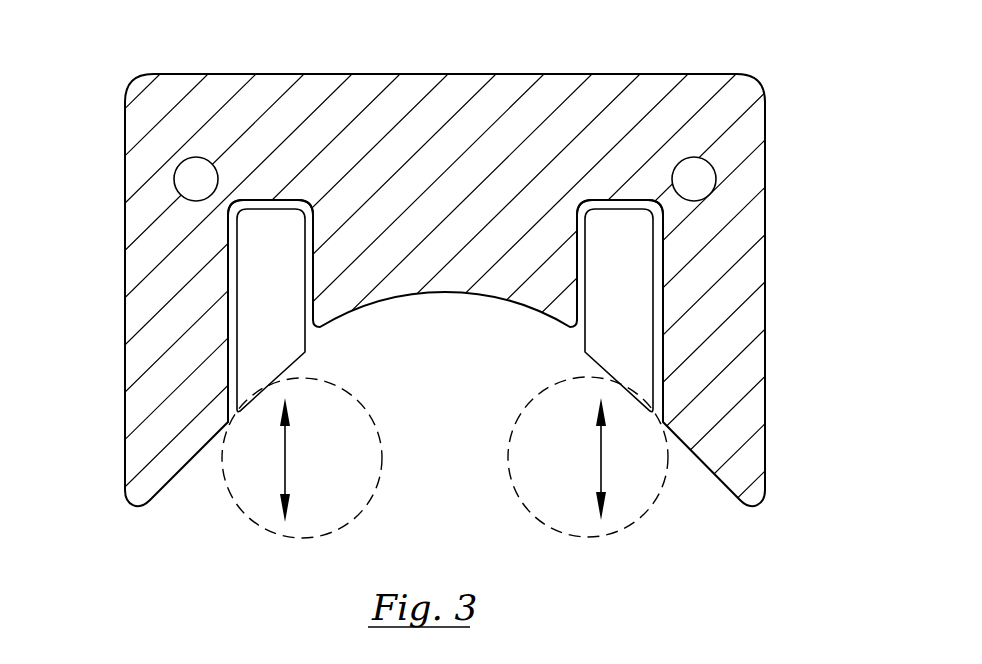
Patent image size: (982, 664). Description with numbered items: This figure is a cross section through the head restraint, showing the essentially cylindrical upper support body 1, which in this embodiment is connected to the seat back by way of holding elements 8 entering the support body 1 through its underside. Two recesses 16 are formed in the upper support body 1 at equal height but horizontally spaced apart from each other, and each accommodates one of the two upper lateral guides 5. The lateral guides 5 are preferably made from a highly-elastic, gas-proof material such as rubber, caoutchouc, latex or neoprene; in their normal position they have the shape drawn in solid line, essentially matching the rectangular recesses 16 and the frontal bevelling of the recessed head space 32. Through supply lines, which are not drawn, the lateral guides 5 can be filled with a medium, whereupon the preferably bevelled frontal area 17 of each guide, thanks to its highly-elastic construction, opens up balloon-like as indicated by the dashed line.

The upper support body 1 is at (733, 107).
The recessed head space 32 is at (622, 72).
The holding element 8 is at (695, 178).
The recesses 16 is at (228, 282).
The lateral guides 5 is at (250, 335).
The frontal area 17 is at (282, 378).